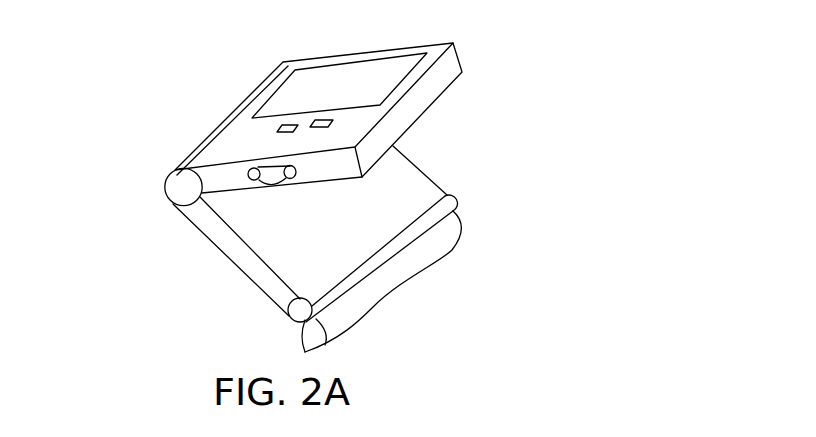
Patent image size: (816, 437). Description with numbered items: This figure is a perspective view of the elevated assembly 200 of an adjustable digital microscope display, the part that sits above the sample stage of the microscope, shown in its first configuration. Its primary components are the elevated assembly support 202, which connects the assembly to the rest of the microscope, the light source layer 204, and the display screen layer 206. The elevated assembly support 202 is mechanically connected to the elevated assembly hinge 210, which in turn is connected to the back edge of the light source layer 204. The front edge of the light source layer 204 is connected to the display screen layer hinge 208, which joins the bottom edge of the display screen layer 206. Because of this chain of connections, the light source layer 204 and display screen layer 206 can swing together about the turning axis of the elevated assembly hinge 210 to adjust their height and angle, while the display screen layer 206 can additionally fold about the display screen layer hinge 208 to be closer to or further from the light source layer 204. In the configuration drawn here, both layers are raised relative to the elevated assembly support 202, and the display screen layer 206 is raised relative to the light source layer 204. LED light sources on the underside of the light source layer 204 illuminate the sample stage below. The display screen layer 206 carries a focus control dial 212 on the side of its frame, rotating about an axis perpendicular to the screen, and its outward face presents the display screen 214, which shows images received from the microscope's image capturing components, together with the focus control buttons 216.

The elevated assembly 200 is at (78, 97).
The elevated assembly support 202 is at (452, 235).
The light source layer 204 is at (415, 172).
The display screen layer 206 is at (433, 55).
The display screen layer hinge 208 is at (178, 192).
The elevated assembly hinge 210 is at (300, 313).
The focus control dial 212 is at (270, 173).
The display screen 214 is at (358, 75).
The focus control buttons 216 is at (322, 120).